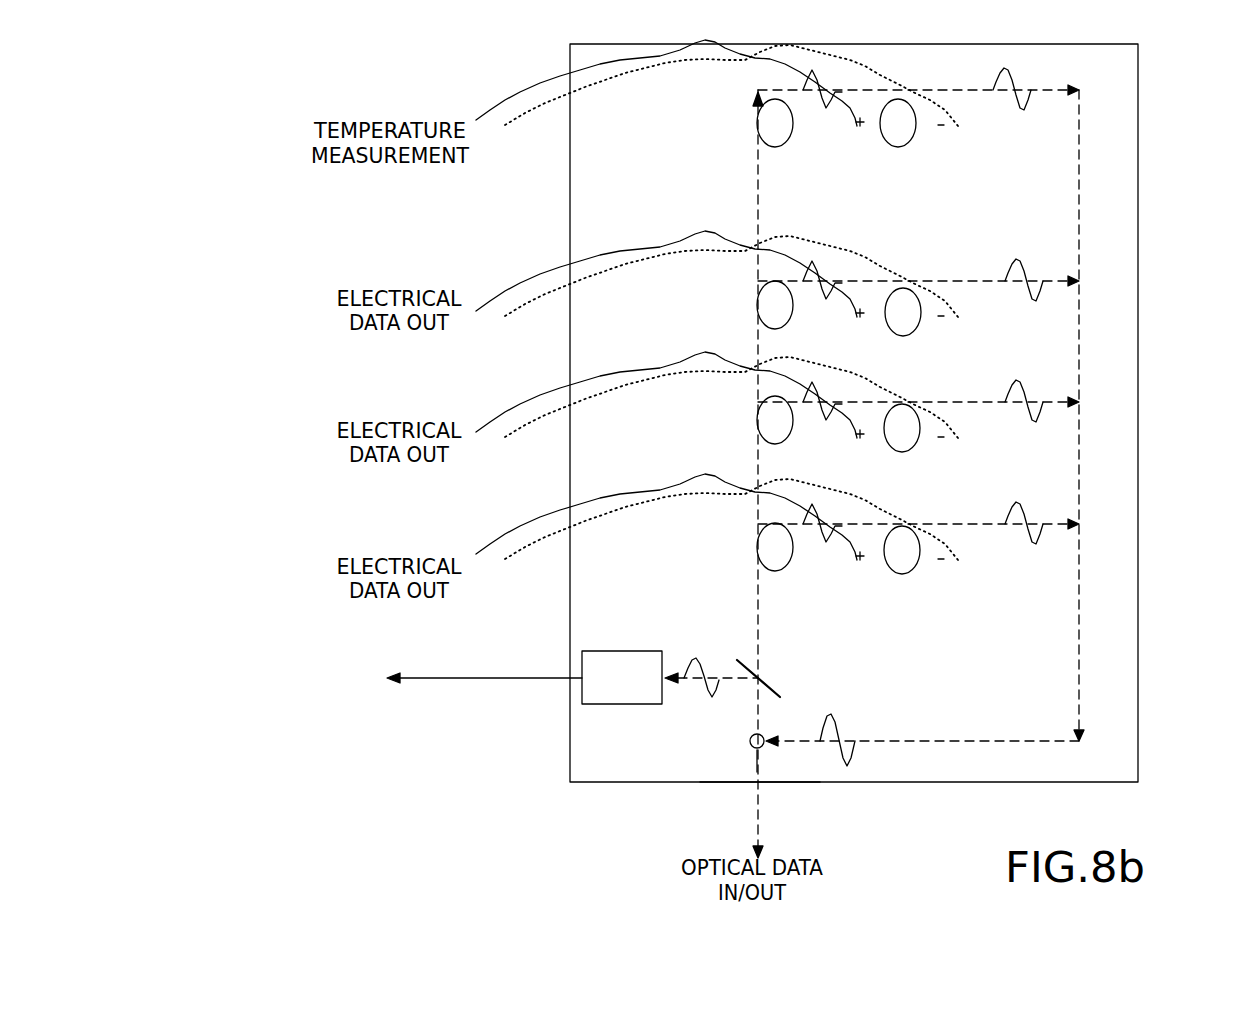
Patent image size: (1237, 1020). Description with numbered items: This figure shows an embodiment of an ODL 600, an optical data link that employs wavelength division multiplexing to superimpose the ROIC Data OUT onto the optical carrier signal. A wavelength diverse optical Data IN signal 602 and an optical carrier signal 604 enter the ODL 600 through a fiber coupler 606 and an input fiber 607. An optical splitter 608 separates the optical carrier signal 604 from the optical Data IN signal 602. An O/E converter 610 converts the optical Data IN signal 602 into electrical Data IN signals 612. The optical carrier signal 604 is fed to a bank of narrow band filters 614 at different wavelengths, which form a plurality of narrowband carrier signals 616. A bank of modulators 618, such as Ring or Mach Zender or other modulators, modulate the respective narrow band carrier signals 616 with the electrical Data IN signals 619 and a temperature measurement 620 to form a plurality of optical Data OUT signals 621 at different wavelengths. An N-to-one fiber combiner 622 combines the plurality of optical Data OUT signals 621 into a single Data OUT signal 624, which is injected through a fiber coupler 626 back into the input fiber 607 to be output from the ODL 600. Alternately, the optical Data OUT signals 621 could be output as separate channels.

The ODL 600 is at (1128, 79).
The optical Data IN signal 602 is at (707, 689).
The optical carrier signal 604 is at (762, 632).
The fiber coupler 606 is at (744, 784).
The input fiber 607 is at (757, 763).
The optical splitter 608 is at (766, 691).
The O/E converter 610 is at (620, 651).
The electrical Data IN signals 612 is at (373, 690).
The bank of narrow band filters 614 is at (745, 419).
The narrowband carrier signals 616 is at (820, 401).
The bank of modulators 618 is at (914, 455).
The electrical Data IN signals 619 is at (511, 399).
The temperature measurement 620 is at (535, 85).
The optical Data OUT signals 621 is at (1014, 399).
The N:1 fiber combiner 622 is at (1106, 477).
The single Data OUT signal 624 is at (830, 727).
The fiber coupler 626 is at (763, 748).